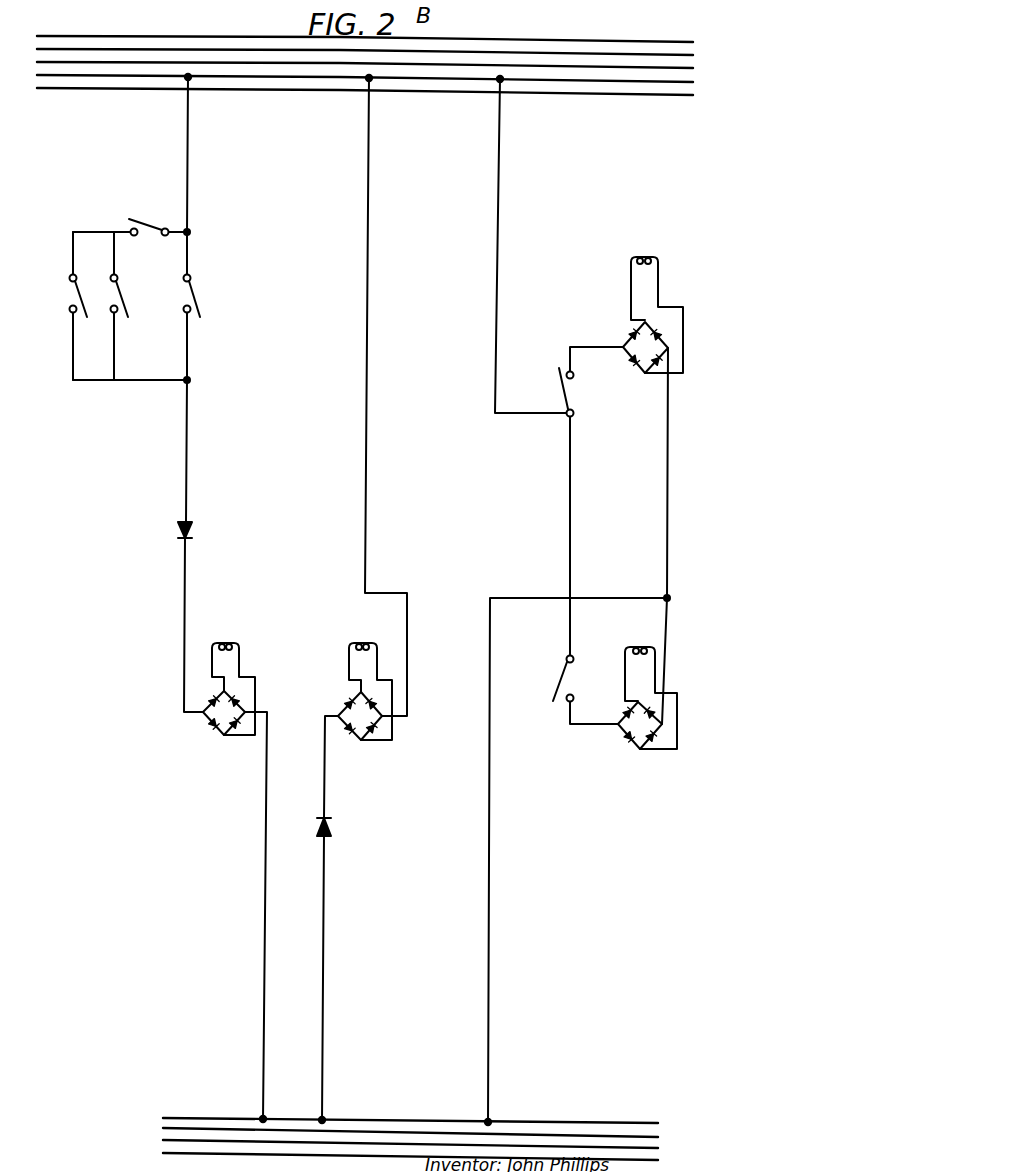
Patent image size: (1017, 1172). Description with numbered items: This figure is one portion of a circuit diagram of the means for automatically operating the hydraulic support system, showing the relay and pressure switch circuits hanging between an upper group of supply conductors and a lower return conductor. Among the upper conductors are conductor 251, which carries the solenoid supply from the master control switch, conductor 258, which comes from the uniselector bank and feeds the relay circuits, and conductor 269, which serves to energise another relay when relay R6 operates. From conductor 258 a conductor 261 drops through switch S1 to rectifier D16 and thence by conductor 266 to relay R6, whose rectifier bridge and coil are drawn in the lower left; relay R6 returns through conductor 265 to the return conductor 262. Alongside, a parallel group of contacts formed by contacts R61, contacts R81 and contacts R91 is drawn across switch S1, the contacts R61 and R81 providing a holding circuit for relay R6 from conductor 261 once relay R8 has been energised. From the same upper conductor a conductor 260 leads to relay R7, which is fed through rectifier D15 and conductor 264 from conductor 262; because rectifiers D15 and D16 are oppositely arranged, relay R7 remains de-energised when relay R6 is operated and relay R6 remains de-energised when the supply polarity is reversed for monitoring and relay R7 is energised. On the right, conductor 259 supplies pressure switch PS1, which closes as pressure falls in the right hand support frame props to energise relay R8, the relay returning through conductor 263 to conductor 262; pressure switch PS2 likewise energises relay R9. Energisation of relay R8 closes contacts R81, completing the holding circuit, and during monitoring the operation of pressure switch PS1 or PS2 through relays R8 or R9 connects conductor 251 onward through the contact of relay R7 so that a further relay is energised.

The conductor 251 is at (305, 66).
The conductor 258 is at (577, 81).
The conductor 269 is at (680, 95).
The conductor 261 is at (205, 192).
The conductor 266 is at (216, 559).
The conductor 260 is at (368, 160).
The conductor 259 is at (531, 133).
The conductor 265 is at (265, 913).
The conductor 264 is at (325, 928).
The conductor 263 is at (489, 888).
The conductor 262 is at (553, 1096).
The rectifier D16 is at (203, 531).
The rectifier D15 is at (344, 831).
The relay R6 is at (246, 714).
The relay R7 is at (345, 709).
The relay R8 is at (630, 346).
The relay R9 is at (614, 742).
The relay R6 contact R61 is at (145, 239).
The relay R8 contact R81 is at (73, 290).
The relay R9 contact R91 is at (117, 286).
The switch S1 is at (189, 283).
The pressure switch PS1 is at (573, 393).
The pressure switch PS2 is at (572, 678).